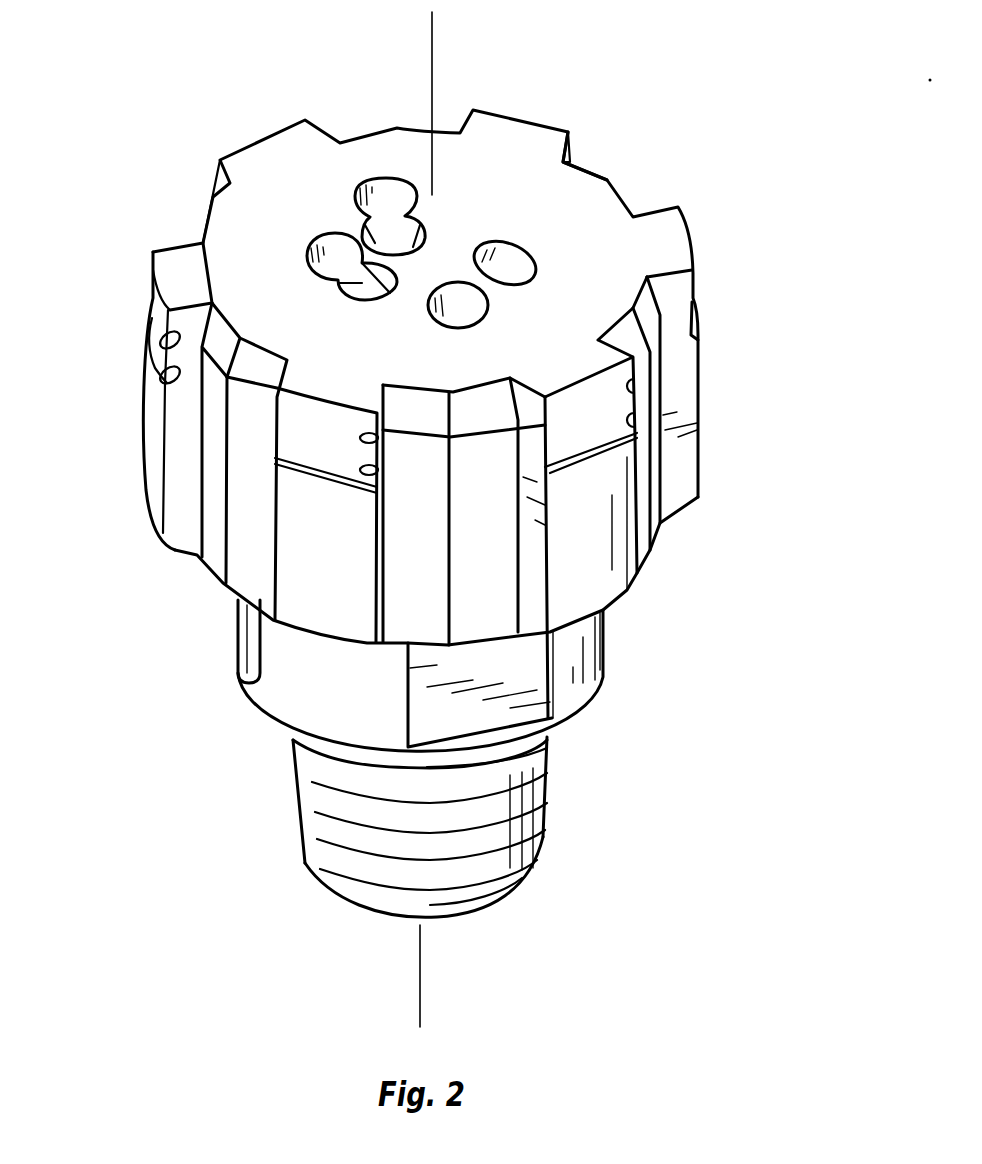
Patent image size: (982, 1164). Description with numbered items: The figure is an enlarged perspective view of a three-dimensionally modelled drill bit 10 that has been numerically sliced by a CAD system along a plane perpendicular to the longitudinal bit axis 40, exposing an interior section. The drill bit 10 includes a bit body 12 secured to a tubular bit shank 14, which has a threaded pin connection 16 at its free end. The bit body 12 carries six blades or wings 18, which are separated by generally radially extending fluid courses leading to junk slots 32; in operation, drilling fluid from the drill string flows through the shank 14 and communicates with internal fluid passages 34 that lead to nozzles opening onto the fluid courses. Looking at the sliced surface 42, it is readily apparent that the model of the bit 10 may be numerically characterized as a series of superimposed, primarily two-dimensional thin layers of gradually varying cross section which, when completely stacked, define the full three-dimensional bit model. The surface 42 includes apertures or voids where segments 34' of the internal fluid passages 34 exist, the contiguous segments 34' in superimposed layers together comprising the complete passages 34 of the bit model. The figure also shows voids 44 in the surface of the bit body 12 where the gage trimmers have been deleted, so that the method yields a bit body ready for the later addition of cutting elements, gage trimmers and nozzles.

The drill bit 10 is at (431, 519).
The bit body 12 is at (707, 363).
The tubular bit shank 14 is at (577, 690).
The threaded pin connection 16 is at (547, 833).
The blades or wings 18 is at (593, 503).
The junk slots 32 is at (478, 572).
The internal fluid passages 34 is at (224, 239).
The segments of internal fluid passages 34' is at (620, 280).
The longitudinal bit axis 40 is at (432, 65).
The surface 42 is at (557, 200).
The voids 44 is at (162, 383).